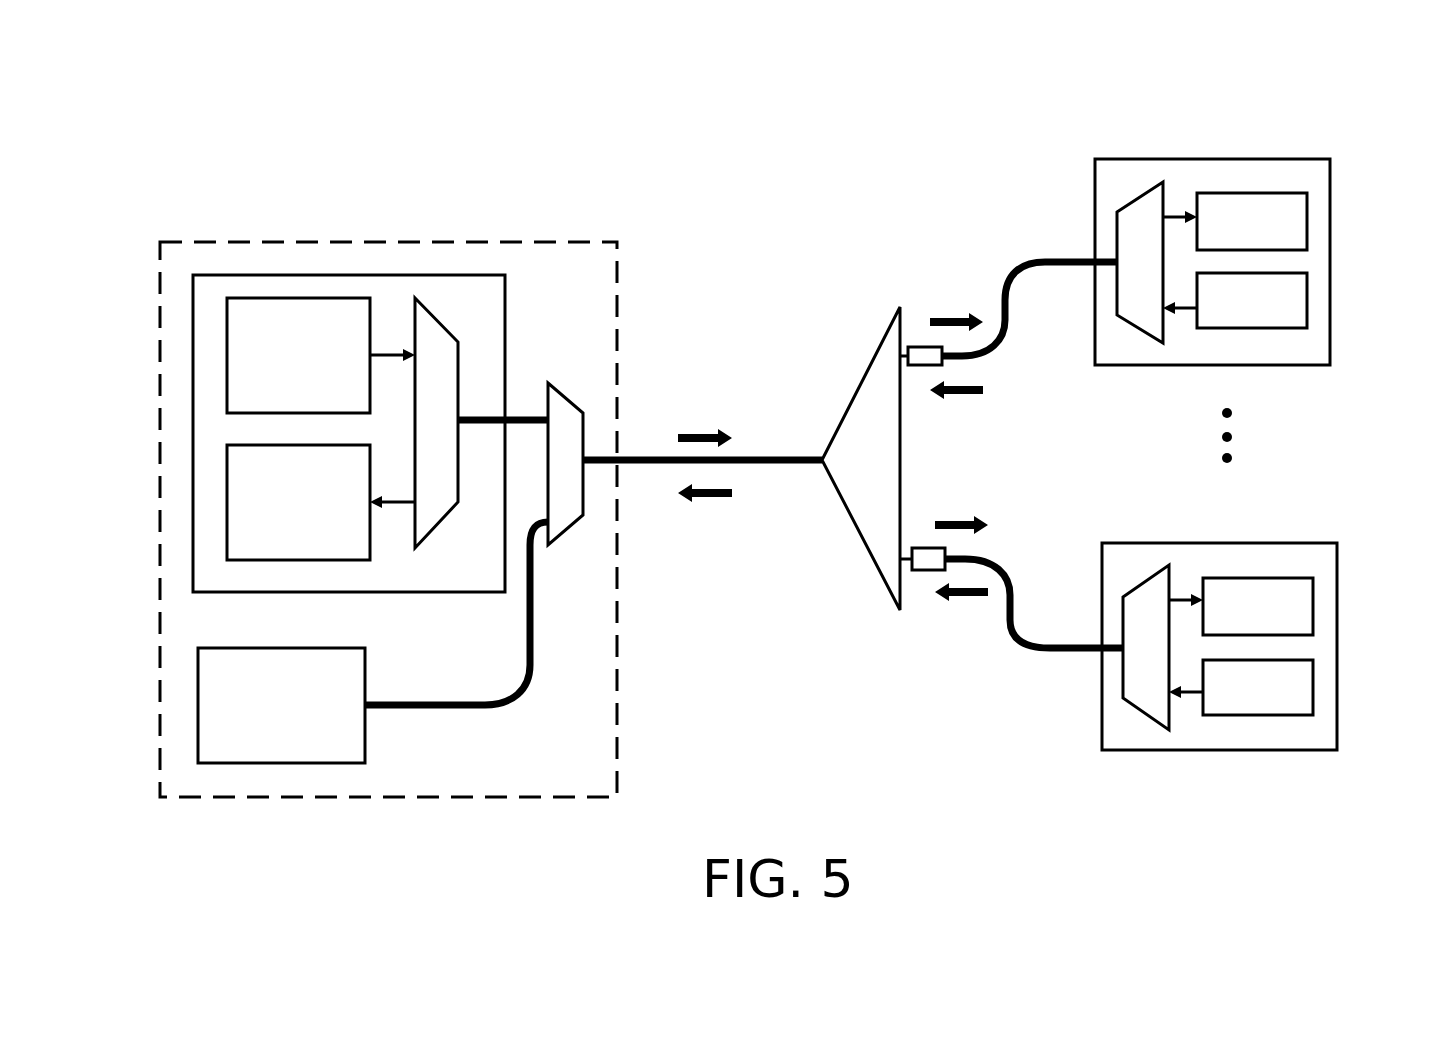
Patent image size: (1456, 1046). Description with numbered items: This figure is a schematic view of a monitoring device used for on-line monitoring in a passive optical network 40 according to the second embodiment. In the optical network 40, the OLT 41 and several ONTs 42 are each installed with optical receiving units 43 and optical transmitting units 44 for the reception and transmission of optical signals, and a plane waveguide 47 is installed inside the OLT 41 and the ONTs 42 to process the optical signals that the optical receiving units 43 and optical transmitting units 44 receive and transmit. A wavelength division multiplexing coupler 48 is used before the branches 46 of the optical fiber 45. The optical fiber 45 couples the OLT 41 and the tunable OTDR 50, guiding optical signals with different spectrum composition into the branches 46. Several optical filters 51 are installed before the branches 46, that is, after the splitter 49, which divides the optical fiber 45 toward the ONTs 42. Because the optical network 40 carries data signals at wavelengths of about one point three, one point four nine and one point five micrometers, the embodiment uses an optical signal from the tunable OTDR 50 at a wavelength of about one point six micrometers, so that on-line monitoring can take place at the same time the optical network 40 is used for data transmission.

The optical network 40 is at (1333, 113).
The OLT 41 is at (192, 423).
The ONT 42 is at (1203, 159).
The optical receiving unit 43 is at (223, 513).
The optical transmitting unit 44 is at (223, 330).
The optical fiber 45 is at (777, 452).
The branch 46 is at (1043, 260).
The plane waveguide 47 is at (413, 297).
The wavelength division multiplexing coupler 48 is at (583, 397).
The splitter 49 is at (857, 393).
The tunable OTDR 50 is at (305, 763).
The optical filter 51 is at (920, 343).